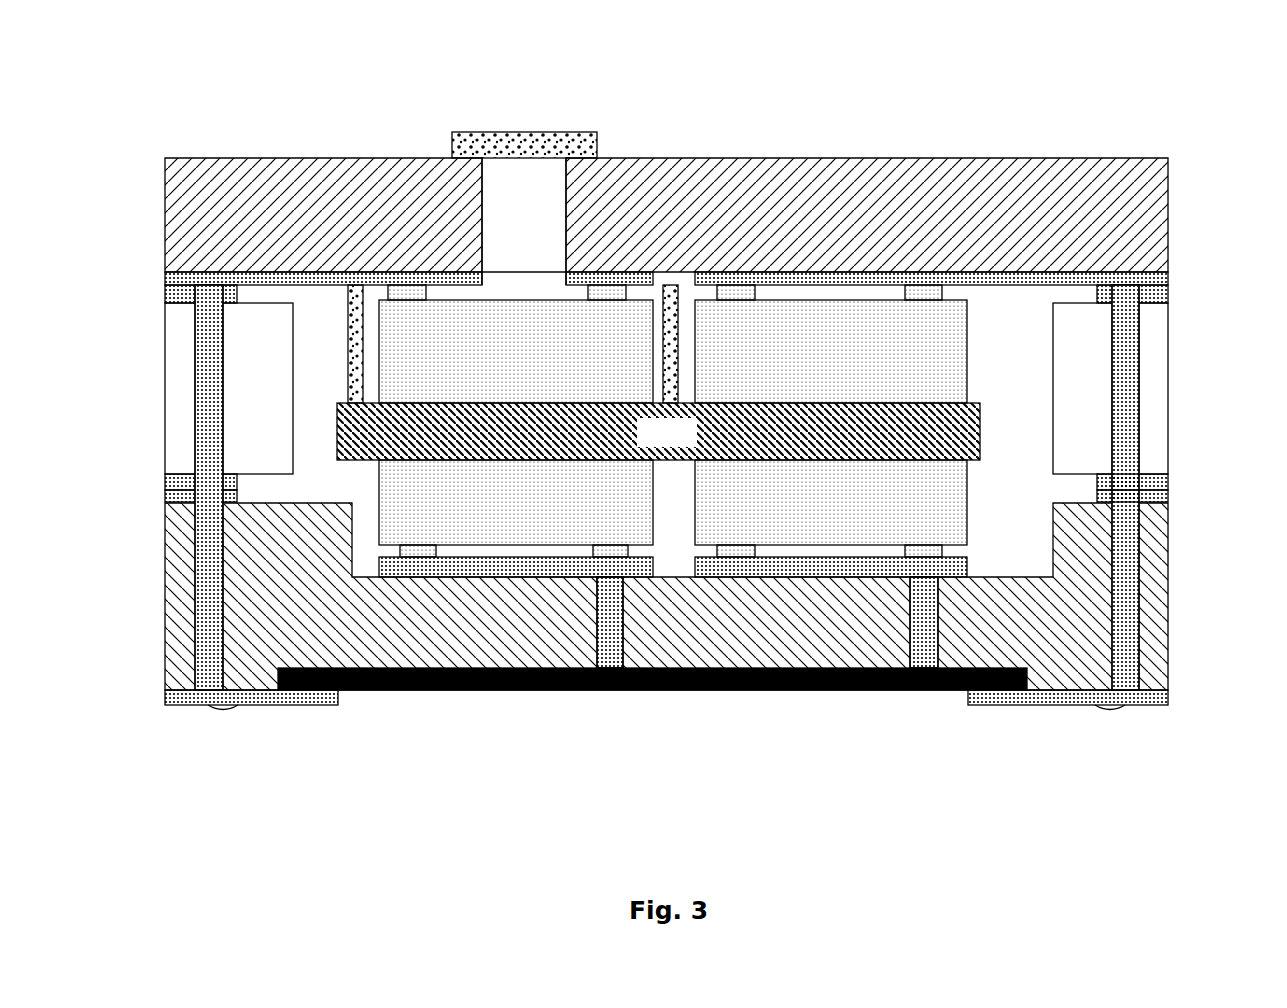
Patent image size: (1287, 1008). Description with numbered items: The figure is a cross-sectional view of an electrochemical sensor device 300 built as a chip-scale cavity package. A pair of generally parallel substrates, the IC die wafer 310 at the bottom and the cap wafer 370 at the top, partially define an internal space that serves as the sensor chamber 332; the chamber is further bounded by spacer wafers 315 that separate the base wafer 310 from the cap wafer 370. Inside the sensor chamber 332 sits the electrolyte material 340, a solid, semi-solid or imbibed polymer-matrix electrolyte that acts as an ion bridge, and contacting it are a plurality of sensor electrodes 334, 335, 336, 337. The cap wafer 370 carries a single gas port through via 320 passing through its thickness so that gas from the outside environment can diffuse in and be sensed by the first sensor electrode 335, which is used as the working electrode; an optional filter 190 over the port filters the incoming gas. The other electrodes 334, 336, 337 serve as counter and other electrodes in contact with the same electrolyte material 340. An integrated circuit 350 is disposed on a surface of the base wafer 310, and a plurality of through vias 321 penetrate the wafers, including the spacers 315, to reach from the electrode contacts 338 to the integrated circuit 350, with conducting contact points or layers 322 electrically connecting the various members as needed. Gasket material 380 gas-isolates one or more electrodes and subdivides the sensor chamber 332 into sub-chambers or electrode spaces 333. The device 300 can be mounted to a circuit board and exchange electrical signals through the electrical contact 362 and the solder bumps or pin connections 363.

The electrochemical sensor device 300 is at (165, 42).
The cap wafer 370 is at (163, 248).
The gas port through via 320 is at (523, 185).
The filter 190 is at (580, 127).
The electrode contacts 338 is at (268, 272).
The spacer wafers 315 is at (163, 384).
The gasket material 380 is at (347, 383).
The IC die wafer 310 is at (163, 573).
The electrode space 333 is at (377, 547).
The solder bumps 363 is at (218, 708).
The electrical contact 362 is at (323, 708).
The integrated circuit 350 is at (745, 693).
The through vias 321 is at (1141, 583).
The conducting contact points 322 is at (1170, 482).
The sensor chamber 332 is at (1013, 331).
The sensor electrode 334 is at (516, 502).
The first sensor electrode 335 is at (516, 351).
The sensor electrode 336 is at (831, 502).
The sensor electrode 337 is at (831, 351).
The electrolyte material 340 is at (658, 431).